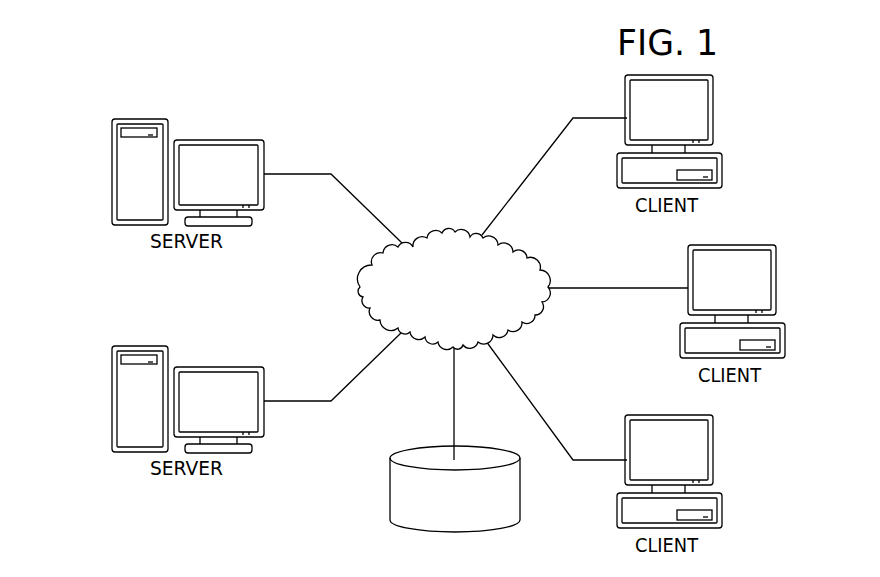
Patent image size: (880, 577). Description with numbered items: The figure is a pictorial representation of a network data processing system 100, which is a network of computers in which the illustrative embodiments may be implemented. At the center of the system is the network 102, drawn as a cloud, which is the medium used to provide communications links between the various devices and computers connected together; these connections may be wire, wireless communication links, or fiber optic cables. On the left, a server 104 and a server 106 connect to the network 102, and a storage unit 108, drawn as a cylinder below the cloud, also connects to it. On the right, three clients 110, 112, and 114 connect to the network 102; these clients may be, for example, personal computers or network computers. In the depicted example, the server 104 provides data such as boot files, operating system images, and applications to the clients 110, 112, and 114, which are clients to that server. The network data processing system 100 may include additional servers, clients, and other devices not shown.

The network data processing system 100 is at (335, 90).
The network 102 is at (448, 232).
The server 104 is at (112, 172).
The server 106 is at (112, 398).
The storage unit 108 is at (390, 490).
The client 110 is at (722, 172).
The client 112 is at (785, 342).
The client 114 is at (722, 513).